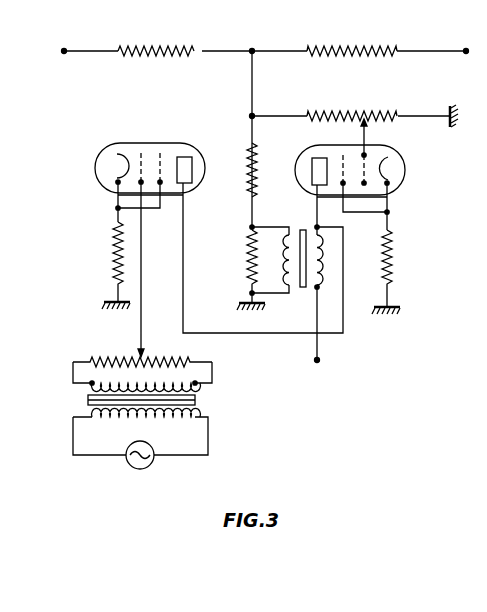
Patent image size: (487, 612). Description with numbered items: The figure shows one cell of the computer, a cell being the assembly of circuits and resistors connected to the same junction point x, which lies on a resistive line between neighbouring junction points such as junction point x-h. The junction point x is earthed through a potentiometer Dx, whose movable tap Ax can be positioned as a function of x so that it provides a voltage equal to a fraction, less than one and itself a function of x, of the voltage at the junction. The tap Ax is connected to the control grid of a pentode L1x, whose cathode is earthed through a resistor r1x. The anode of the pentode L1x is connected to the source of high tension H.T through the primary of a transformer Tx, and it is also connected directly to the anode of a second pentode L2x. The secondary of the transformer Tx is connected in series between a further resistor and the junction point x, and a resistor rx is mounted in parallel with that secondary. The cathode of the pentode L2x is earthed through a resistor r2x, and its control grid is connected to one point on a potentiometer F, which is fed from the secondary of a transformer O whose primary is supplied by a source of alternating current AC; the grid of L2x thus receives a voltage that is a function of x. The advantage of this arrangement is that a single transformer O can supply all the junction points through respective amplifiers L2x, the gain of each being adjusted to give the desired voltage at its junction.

The junction point x-h is at (66, 40).
The junction point x is at (251, 38).
The movable tap Ax is at (352, 109).
The potentiometer Dx is at (381, 113).
The pentode L2x is at (148, 143).
The pentode L1x is at (372, 147).
The resistor rx is at (246, 268).
The resistor r2x is at (112, 258).
The resistor r1x is at (391, 257).
The transformer Tx is at (305, 292).
The source of high tension H.T is at (318, 363).
The potentiometer F is at (123, 360).
The transformer O is at (197, 401).
The source of alternating current AC is at (143, 469).